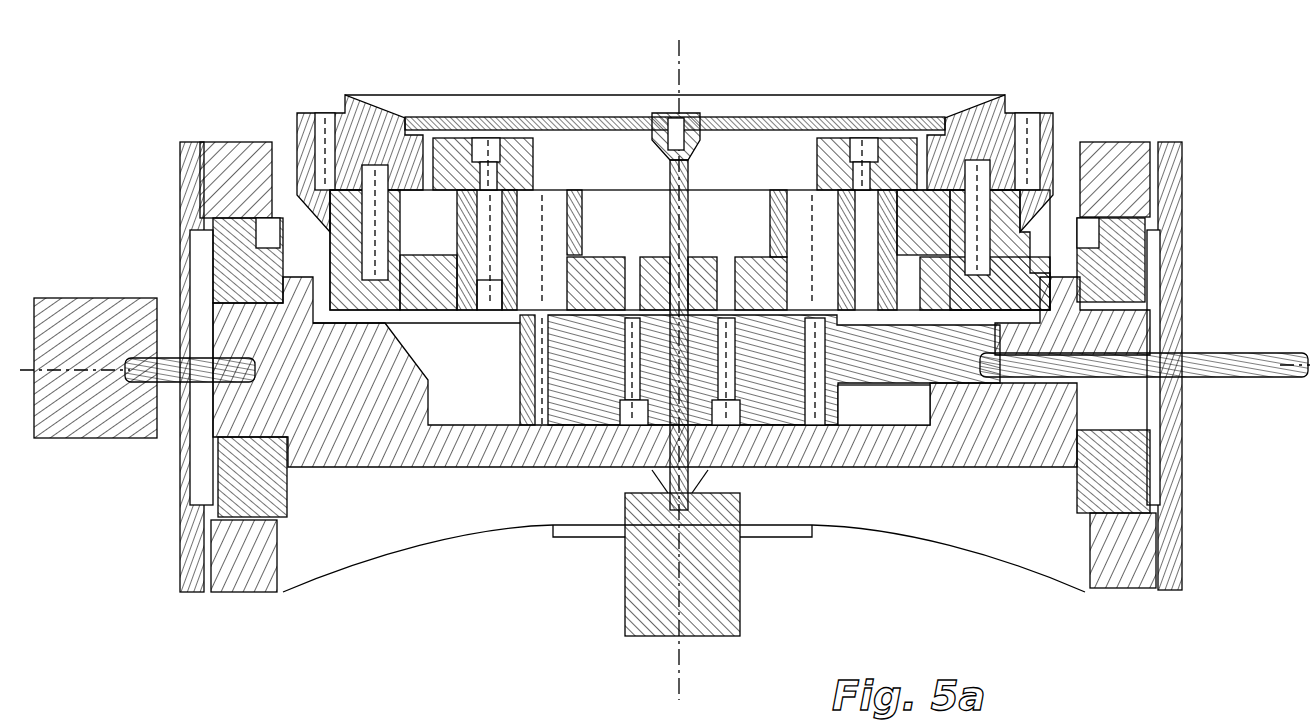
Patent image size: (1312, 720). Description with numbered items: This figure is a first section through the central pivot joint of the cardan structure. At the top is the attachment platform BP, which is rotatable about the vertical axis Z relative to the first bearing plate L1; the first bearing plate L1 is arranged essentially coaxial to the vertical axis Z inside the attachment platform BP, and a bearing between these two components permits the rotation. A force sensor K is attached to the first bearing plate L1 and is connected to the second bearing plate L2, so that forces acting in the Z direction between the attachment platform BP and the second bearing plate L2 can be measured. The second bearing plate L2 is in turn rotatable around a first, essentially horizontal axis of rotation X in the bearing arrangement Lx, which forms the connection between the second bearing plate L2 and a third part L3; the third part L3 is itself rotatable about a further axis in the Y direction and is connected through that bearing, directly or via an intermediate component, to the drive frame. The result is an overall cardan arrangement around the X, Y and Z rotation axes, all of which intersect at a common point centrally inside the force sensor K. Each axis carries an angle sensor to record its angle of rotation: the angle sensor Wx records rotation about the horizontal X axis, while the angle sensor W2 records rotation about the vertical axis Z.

The angle sensor Wx is at (95, 438).
The angle sensor W2 is at (742, 618).
The vertical axis Z is at (680, 80).
The attachment platform BP is at (893, 108).
The first bearing plate L1 is at (748, 252).
The second bearing plate L2 is at (893, 478).
The third part L3 is at (262, 592).
The bearing arrangement Lx is at (273, 473).
The force sensor K is at (585, 400).